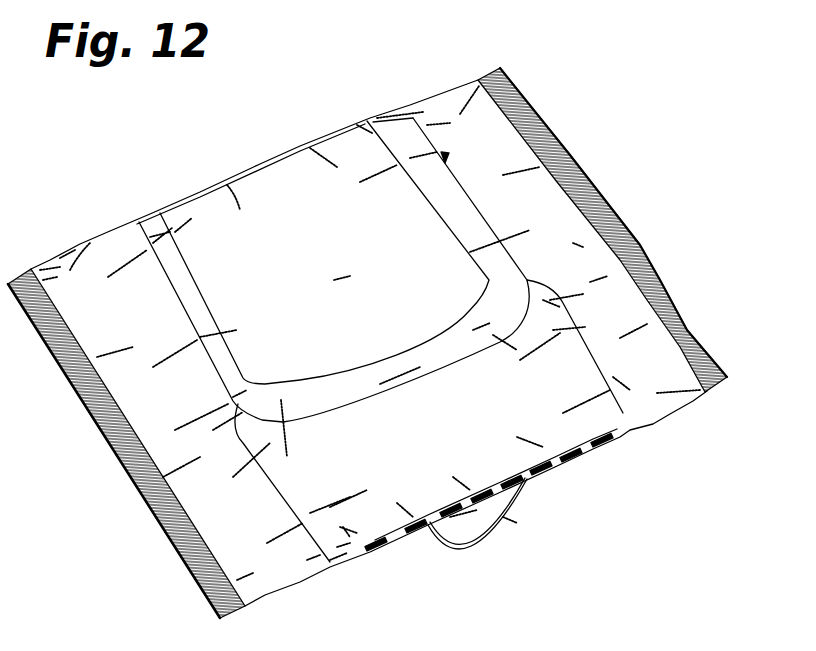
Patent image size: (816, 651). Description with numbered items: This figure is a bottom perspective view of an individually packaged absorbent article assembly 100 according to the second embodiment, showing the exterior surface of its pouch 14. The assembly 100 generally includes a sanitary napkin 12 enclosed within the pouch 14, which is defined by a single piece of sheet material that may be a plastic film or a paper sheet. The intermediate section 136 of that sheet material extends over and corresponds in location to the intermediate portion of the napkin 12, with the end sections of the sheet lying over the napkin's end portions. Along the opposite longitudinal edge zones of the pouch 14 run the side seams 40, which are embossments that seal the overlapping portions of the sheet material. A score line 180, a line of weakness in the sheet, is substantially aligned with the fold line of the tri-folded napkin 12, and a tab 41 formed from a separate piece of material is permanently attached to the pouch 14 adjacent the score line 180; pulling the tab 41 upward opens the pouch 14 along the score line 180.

The individually packaged absorbent article assembly 100 is at (593, 114).
The sanitary napkin 12 is at (295, 183).
The pouch 14 is at (103, 248).
The side seams 40 is at (130, 487).
The intermediate section 136 is at (334, 270).
The score line 180 is at (612, 460).
The tab 41 is at (528, 508).